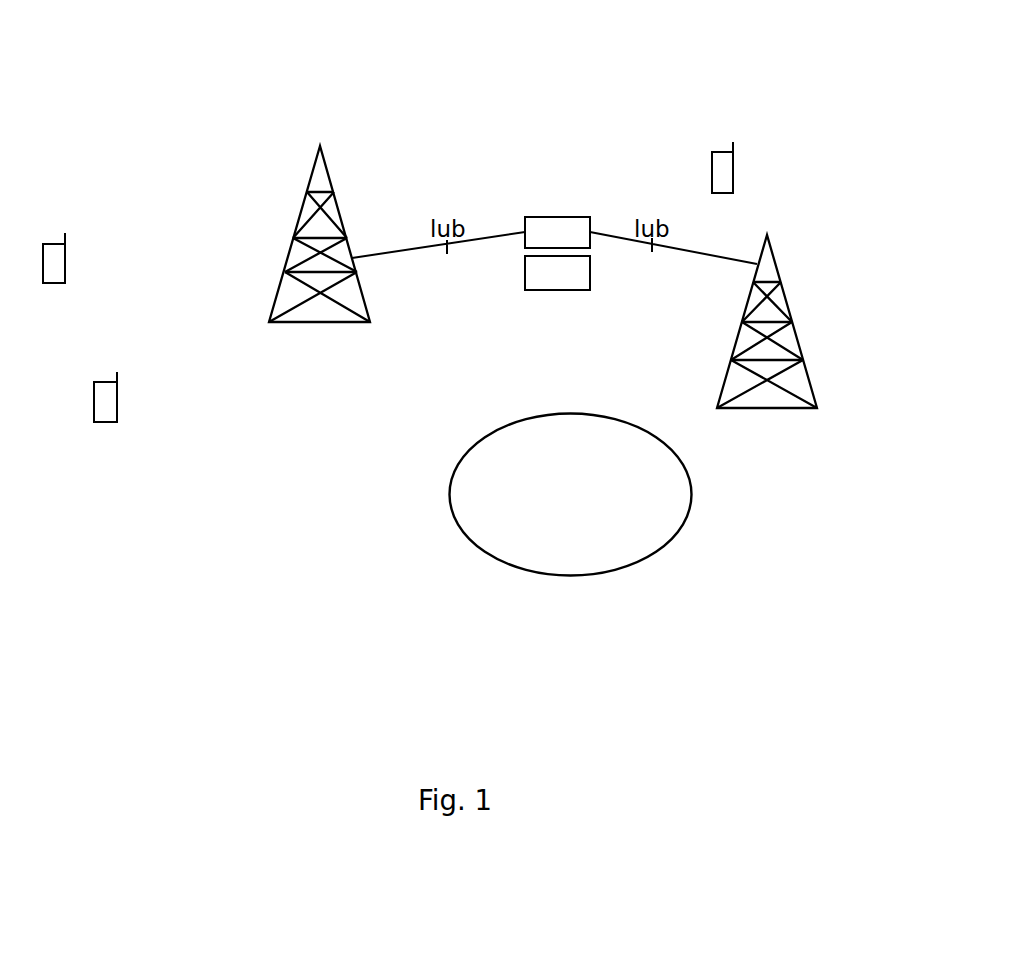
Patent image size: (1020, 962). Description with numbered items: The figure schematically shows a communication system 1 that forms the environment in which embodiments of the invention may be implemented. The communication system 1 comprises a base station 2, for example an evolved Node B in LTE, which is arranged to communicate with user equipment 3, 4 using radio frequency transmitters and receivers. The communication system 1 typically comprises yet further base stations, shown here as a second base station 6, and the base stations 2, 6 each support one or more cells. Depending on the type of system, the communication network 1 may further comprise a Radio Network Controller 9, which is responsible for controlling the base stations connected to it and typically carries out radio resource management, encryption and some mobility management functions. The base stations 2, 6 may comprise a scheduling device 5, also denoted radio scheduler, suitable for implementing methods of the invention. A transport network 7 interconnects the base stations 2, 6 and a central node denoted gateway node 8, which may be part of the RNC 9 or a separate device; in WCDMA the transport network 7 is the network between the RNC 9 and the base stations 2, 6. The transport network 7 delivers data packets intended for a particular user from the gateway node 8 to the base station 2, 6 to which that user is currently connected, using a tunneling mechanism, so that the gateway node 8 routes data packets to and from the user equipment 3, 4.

The communication system 1 is at (624, 54).
The base station 2 is at (359, 290).
The user equipment 3 is at (115, 402).
The user equipment 4 is at (63, 264).
The scheduling device 5 is at (731, 172).
The base station 6 is at (805, 378).
The transport network 7 is at (665, 533).
The gateway node 8 is at (590, 276).
The Radio Network Controller 9 is at (553, 217).